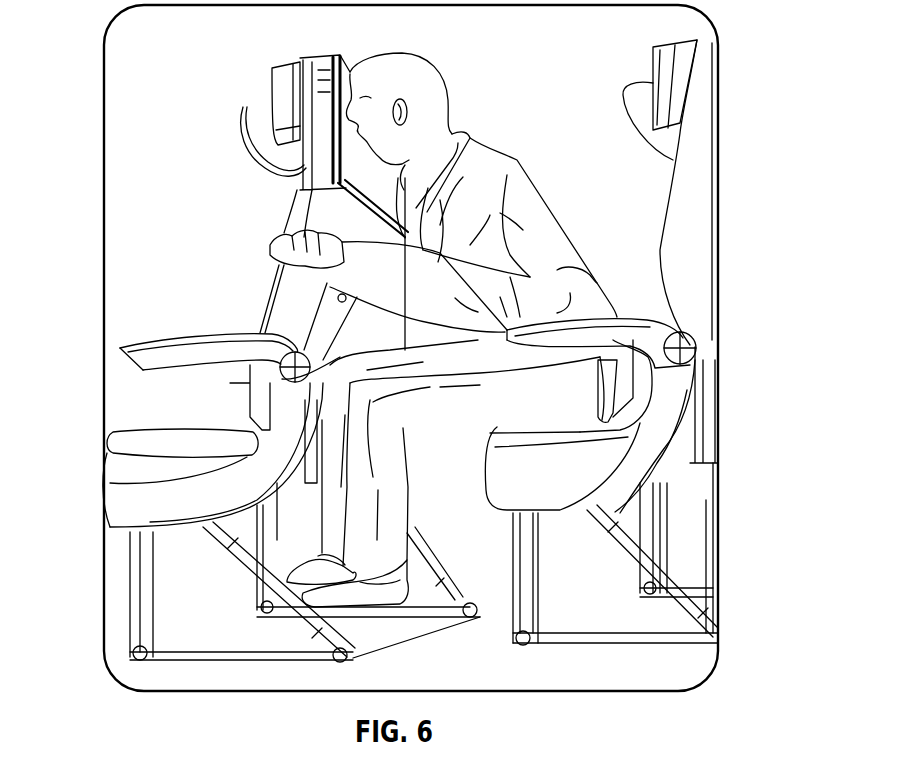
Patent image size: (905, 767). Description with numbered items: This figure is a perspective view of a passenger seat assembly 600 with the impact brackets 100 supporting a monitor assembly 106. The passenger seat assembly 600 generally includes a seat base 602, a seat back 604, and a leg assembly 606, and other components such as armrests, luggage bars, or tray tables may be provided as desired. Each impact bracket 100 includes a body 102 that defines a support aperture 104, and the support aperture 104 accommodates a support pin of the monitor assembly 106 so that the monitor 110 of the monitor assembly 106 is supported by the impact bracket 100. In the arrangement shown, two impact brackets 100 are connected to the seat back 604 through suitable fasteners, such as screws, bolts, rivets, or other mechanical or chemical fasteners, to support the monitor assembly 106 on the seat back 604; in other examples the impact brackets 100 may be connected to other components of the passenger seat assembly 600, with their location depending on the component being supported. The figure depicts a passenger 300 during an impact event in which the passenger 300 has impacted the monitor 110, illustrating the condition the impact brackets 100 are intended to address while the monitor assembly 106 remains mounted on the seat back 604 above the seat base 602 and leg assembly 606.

The passenger seat assembly 600 is at (198, 70).
The impact bracket 100 is at (300, 60).
The body 102 is at (320, 83).
The support aperture 104 is at (243, 110).
The monitor assembly 106 is at (392, 183).
The monitor 110 is at (320, 163).
The passenger 300 is at (497, 148).
The seat base 602 is at (118, 468).
The seat back 604 is at (280, 312).
The leg assembly 606 is at (147, 597).